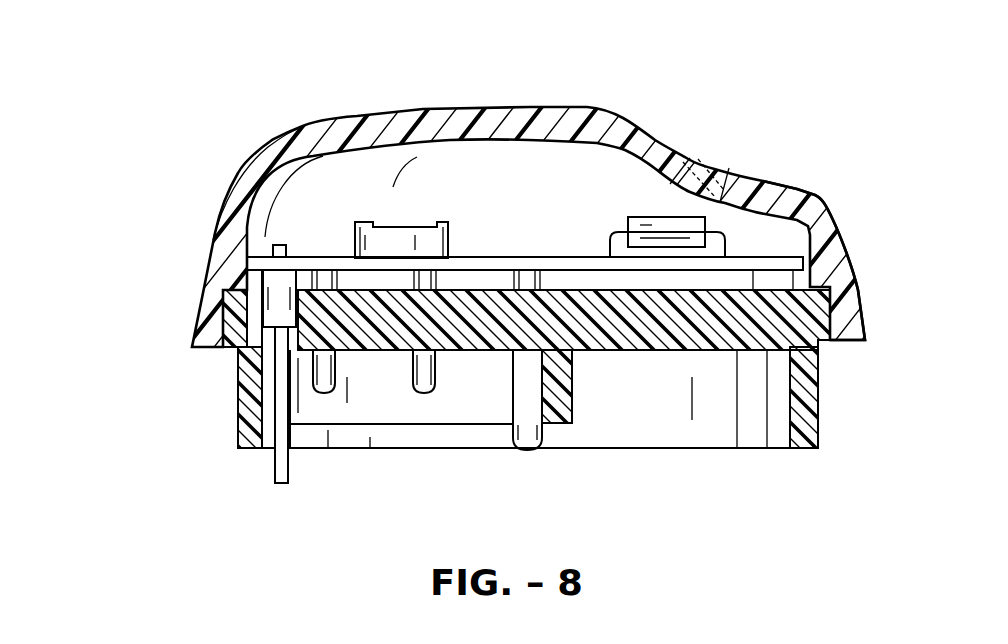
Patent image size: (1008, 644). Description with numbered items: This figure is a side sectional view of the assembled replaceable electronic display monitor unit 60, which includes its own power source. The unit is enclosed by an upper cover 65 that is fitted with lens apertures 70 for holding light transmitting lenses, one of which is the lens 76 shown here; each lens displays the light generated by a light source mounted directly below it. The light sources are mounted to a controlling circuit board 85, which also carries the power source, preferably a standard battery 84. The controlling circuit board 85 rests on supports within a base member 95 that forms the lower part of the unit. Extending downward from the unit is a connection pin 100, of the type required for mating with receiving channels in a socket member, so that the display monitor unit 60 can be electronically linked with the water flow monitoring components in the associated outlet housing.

The replaceable electronic display monitor unit 60 is at (180, 59).
The upper cover 65 is at (303, 124).
The lens apertures 70 is at (773, 182).
The light transmitting lens 76 is at (700, 170).
The battery 84 is at (390, 222).
The controlling circuit board 85 is at (310, 256).
The base member 95 is at (237, 373).
The connection pin 100 is at (273, 468).